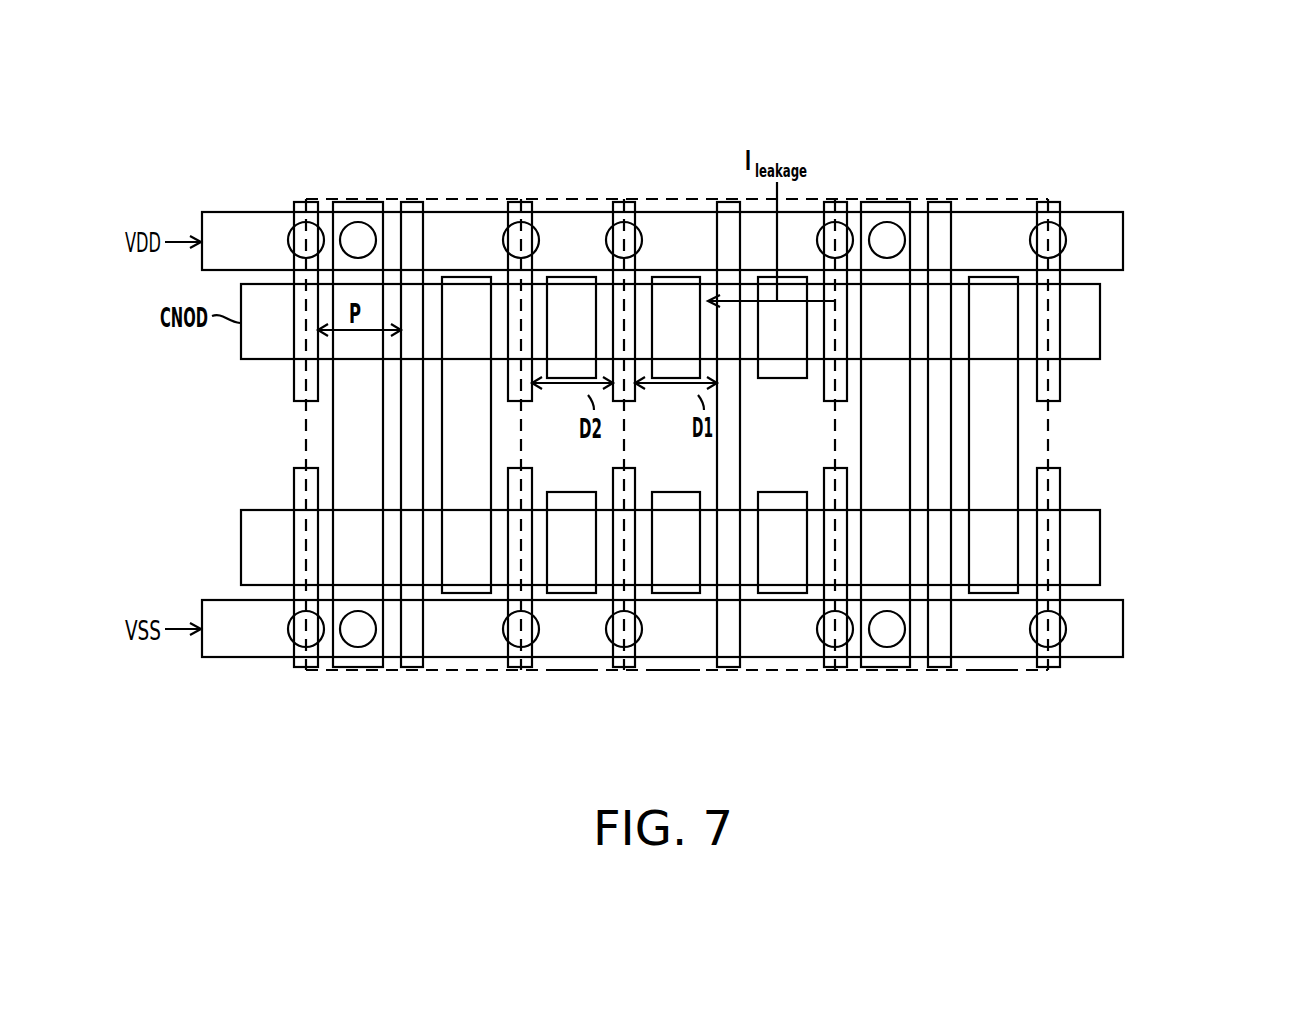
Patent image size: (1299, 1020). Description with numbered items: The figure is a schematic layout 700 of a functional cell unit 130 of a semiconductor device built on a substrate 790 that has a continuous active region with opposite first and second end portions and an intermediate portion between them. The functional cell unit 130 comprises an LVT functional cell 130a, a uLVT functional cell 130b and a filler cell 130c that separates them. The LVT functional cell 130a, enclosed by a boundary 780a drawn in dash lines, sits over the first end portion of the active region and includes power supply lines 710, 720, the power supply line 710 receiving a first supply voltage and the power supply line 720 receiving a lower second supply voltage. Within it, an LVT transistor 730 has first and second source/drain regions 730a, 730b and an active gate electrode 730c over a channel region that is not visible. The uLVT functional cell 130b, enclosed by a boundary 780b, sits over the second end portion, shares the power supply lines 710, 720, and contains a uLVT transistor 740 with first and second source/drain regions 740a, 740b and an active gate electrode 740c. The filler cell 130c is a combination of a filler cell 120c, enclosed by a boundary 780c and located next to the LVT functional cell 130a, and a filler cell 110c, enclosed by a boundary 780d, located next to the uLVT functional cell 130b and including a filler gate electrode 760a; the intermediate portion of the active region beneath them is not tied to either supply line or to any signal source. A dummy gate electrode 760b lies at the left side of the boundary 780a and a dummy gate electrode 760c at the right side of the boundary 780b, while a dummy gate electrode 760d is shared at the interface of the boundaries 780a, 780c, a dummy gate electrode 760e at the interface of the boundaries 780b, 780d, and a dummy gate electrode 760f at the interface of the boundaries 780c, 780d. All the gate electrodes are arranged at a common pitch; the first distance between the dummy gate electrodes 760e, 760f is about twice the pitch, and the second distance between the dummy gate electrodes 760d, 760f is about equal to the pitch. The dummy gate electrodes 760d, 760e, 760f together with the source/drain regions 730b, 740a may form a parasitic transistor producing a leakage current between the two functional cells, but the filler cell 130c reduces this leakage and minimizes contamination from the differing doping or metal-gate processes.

The layout 700 is at (1145, 787).
The power supply line 710 is at (235, 227).
The power supply line 720 is at (228, 642).
The LVT transistor 730 is at (806, 351).
The first source/drain region 730a is at (383, 361).
The second source/drain region 730b is at (435, 362).
The active gate electrode 730c is at (408, 477).
The uLVT transistor 740 is at (1070, 418).
The first source/drain region 740a is at (918, 361).
The second source/drain region 740b is at (955, 361).
The active gate electrode 740c is at (938, 489).
The filler gate electrode 760a is at (741, 402).
The dummy gate electrode 760b is at (300, 383).
The dummy gate electrode 760c is at (1057, 384).
The dummy gate electrode 760d is at (533, 402).
The dummy gate electrode 760e is at (848, 402).
The dummy gate electrode 760f is at (638, 402).
The boundary 780a is at (355, 672).
The boundary 780b is at (978, 672).
The boundary 780c is at (577, 672).
The boundary 780d is at (700, 672).
The substrate 790 is at (325, 433).
The functional cell unit 130 is at (957, 85).
The LVT functional cell 130a is at (393, 197).
The uLVT functional cell 130b is at (937, 197).
The filler cell 130c is at (690, 130).
The filler cell 120c is at (568, 197).
The filler cell 110c is at (673, 197).